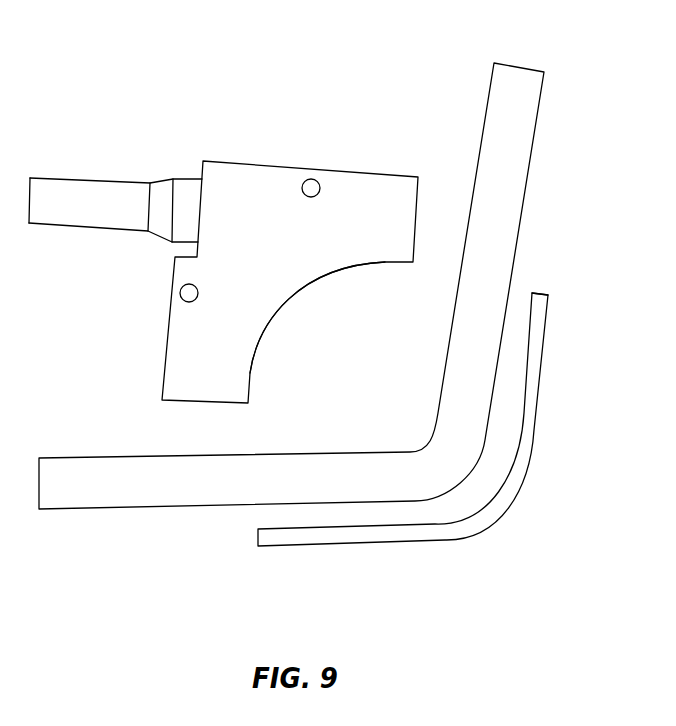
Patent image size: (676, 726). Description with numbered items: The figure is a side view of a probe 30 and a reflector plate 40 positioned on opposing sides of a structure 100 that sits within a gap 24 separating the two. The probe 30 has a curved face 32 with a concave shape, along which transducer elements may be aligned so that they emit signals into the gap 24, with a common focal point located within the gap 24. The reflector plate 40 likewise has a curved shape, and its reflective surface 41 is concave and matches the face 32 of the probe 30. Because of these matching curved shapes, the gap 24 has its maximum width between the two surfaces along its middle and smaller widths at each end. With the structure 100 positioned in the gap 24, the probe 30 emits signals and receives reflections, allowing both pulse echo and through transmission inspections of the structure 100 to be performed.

The probe 30 is at (257, 192).
The curved face 32 is at (252, 373).
The gap 24 is at (407, 313).
The structure 100 is at (523, 88).
The reflector plate 40 is at (518, 408).
The reflective surface 41 is at (528, 313).